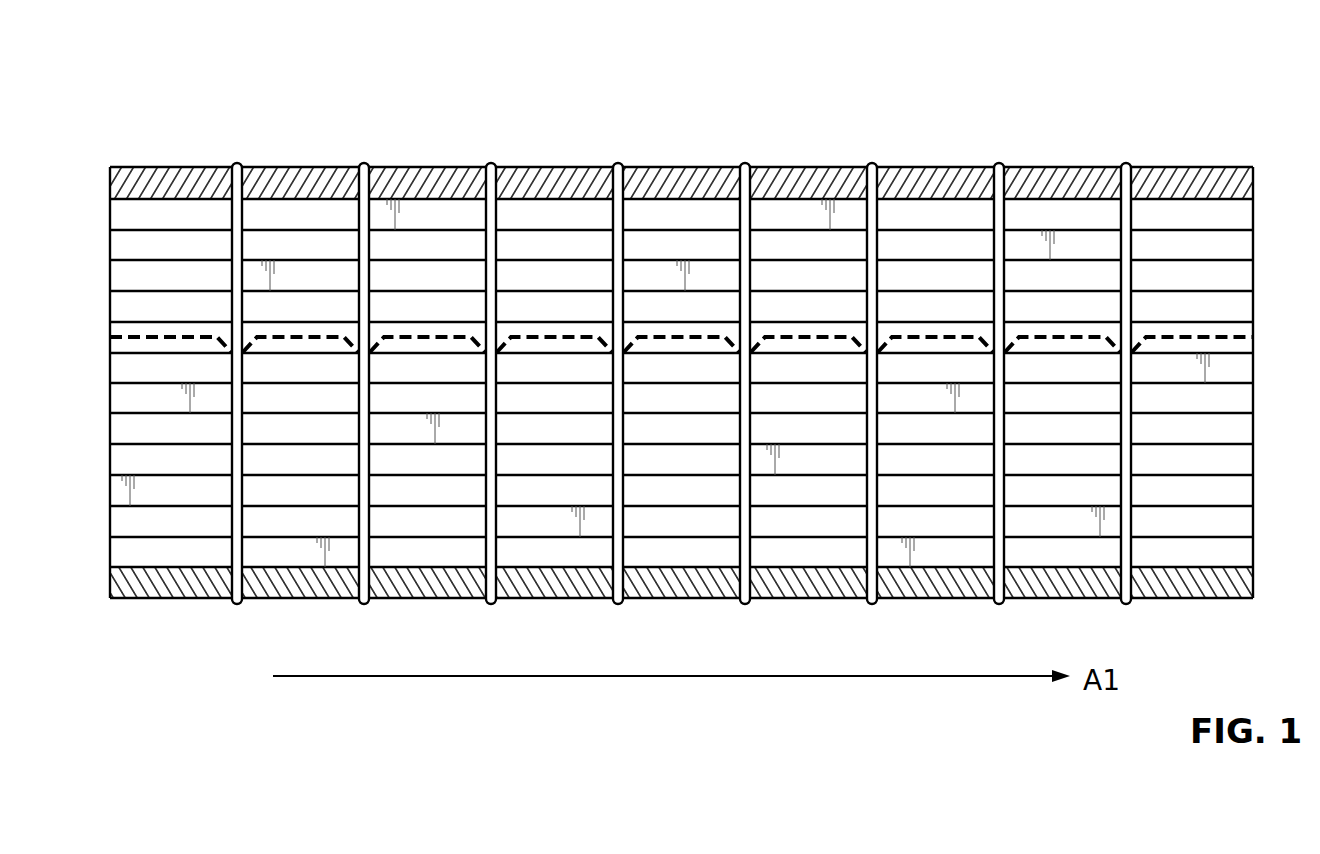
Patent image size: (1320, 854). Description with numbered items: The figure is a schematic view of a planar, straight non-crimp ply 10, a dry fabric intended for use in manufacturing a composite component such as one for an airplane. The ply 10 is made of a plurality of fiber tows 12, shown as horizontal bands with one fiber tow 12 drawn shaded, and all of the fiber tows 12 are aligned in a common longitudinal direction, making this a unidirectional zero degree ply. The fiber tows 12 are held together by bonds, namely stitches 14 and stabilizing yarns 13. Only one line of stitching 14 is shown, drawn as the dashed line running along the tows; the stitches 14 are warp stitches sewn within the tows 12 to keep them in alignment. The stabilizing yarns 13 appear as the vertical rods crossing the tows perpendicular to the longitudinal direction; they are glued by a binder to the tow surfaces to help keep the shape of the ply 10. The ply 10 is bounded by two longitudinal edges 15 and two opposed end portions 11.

The ply 10 is at (669, 373).
The end portion 11 is at (110, 430).
The fiber tow 12 is at (702, 178).
The stabilizing yarn 13 is at (1000, 256).
The stitch 14 is at (1205, 337).
The longitudinal edge 15 is at (291, 167).